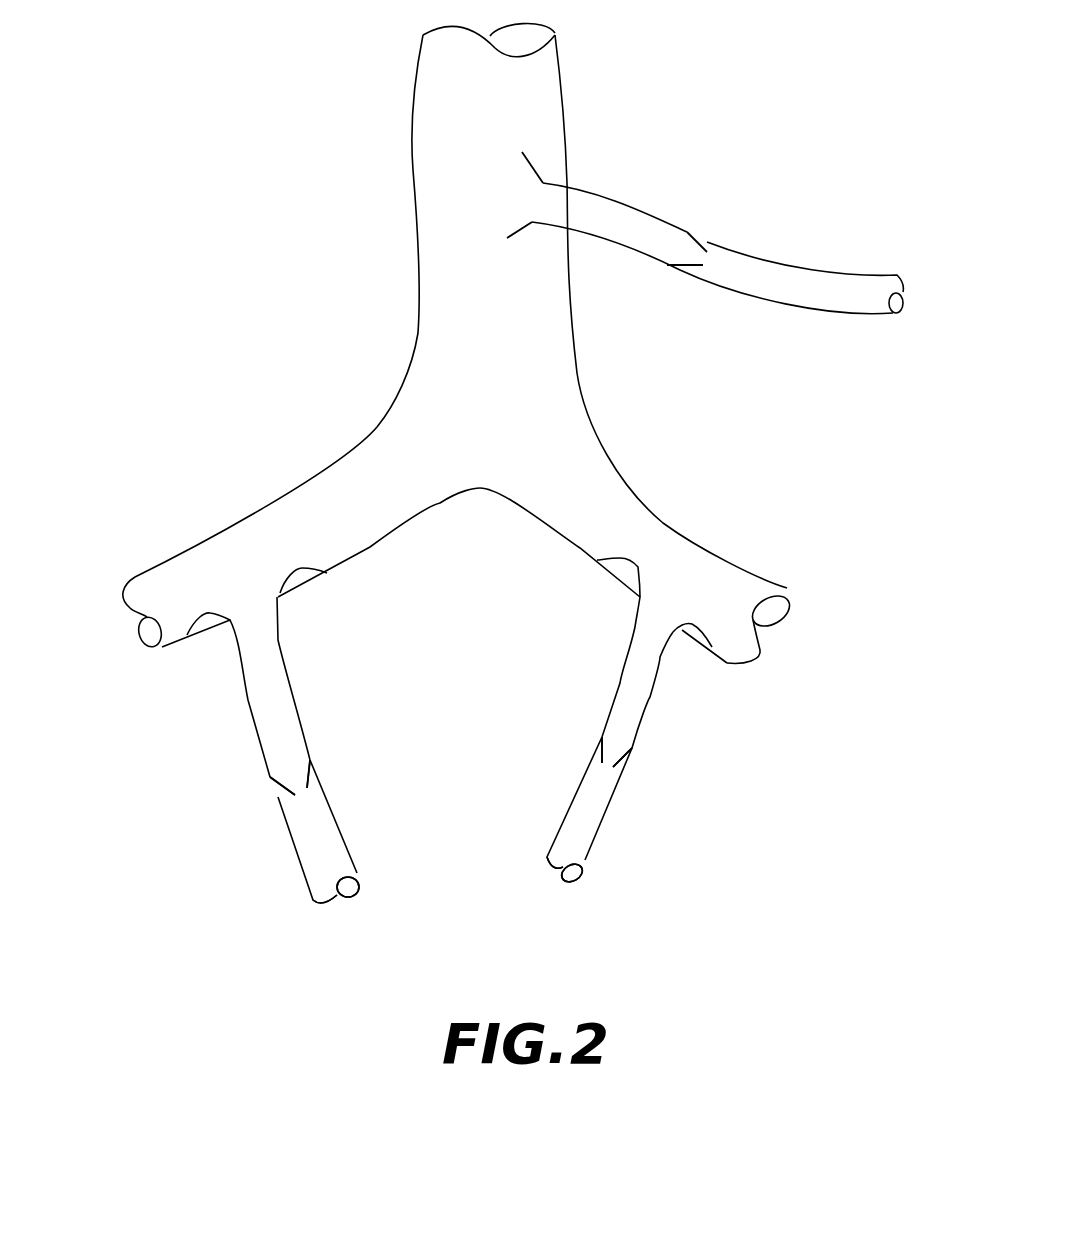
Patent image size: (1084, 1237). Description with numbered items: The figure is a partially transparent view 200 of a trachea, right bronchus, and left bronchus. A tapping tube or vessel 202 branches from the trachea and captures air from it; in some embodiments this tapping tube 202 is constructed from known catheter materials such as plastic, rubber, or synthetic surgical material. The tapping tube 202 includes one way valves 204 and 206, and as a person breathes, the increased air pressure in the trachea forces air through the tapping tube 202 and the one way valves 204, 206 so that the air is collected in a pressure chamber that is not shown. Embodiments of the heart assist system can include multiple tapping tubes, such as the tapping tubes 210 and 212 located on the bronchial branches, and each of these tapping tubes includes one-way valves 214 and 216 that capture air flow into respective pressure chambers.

The partially transparent view 200 is at (300, 53).
The tapping tube 202 is at (725, 292).
The one way valve 204 is at (530, 163).
The one way valve 206 is at (698, 240).
The tapping tube 210 is at (585, 863).
The tapping tube 212 is at (313, 900).
The one-way valve 214 is at (625, 767).
The one-way valve 216 is at (278, 797).